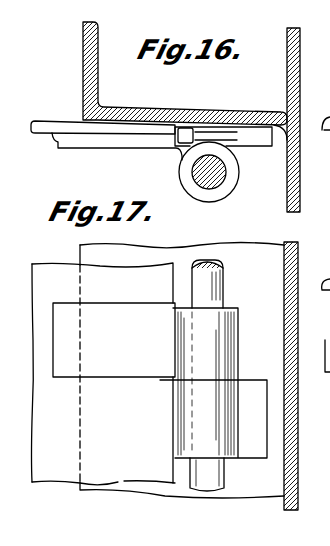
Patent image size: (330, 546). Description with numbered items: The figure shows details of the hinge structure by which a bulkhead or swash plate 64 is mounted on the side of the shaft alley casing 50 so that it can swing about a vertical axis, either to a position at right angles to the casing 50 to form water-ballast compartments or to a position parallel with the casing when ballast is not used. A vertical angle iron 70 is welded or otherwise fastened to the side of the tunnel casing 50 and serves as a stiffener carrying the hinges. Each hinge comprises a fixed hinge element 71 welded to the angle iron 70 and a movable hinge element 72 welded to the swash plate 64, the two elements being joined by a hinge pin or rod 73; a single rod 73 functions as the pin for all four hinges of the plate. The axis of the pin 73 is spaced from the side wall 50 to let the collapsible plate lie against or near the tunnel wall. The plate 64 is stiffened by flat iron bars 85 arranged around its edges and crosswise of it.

In FIG. 16, the shaft alley casing 50 is at (301, 35).
In FIG. 17, the shaft alley casing 50 is at (297, 397).
In FIG. 16, the bulkhead or swash plate 64 is at (49, 121).
In FIG. 17, the bulkhead or swash plate 64 is at (50, 270).
In FIG. 16, the vertical angle iron 70 is at (114, 106).
In FIG. 17, the vertical angle iron 70 is at (247, 248).
In FIG. 16, the fixed hinge element 71 is at (258, 140).
In FIG. 17, the fixed hinge element 71 is at (251, 383).
In FIG. 16, the movable hinge element 72 is at (107, 147).
In FIG. 17, the movable hinge element 72 is at (123, 307).
In FIG. 16, the hinge pin or rod 73 is at (220, 182).
In FIG. 17, the hinge pin or rod 73 is at (212, 281).
In FIG. 16, the iron bars 85 is at (322, 131).
In FIG. 17, the iron bars 85 is at (323, 291).